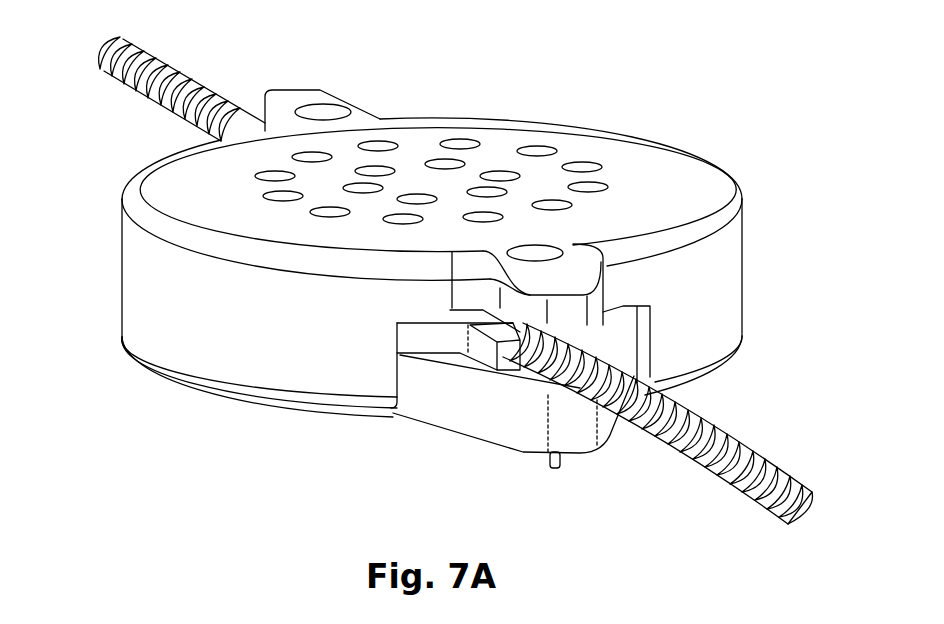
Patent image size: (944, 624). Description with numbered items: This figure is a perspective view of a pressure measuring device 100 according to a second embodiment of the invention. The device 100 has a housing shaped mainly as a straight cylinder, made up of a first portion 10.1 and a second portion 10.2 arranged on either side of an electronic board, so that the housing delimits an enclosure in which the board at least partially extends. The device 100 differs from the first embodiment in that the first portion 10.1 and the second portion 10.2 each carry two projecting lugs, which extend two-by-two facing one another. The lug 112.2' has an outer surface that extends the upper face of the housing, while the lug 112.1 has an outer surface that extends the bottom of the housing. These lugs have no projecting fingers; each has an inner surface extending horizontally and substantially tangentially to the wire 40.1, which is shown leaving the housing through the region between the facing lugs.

The pressure measuring device 100 is at (731, 99).
The first portion 10.1 is at (142, 278).
The second portion 10.2 is at (321, 408).
The projecting lug 112.1 is at (523, 442).
The projecting lug 112.2' is at (322, 74).
The wire 40.1 is at (730, 433).